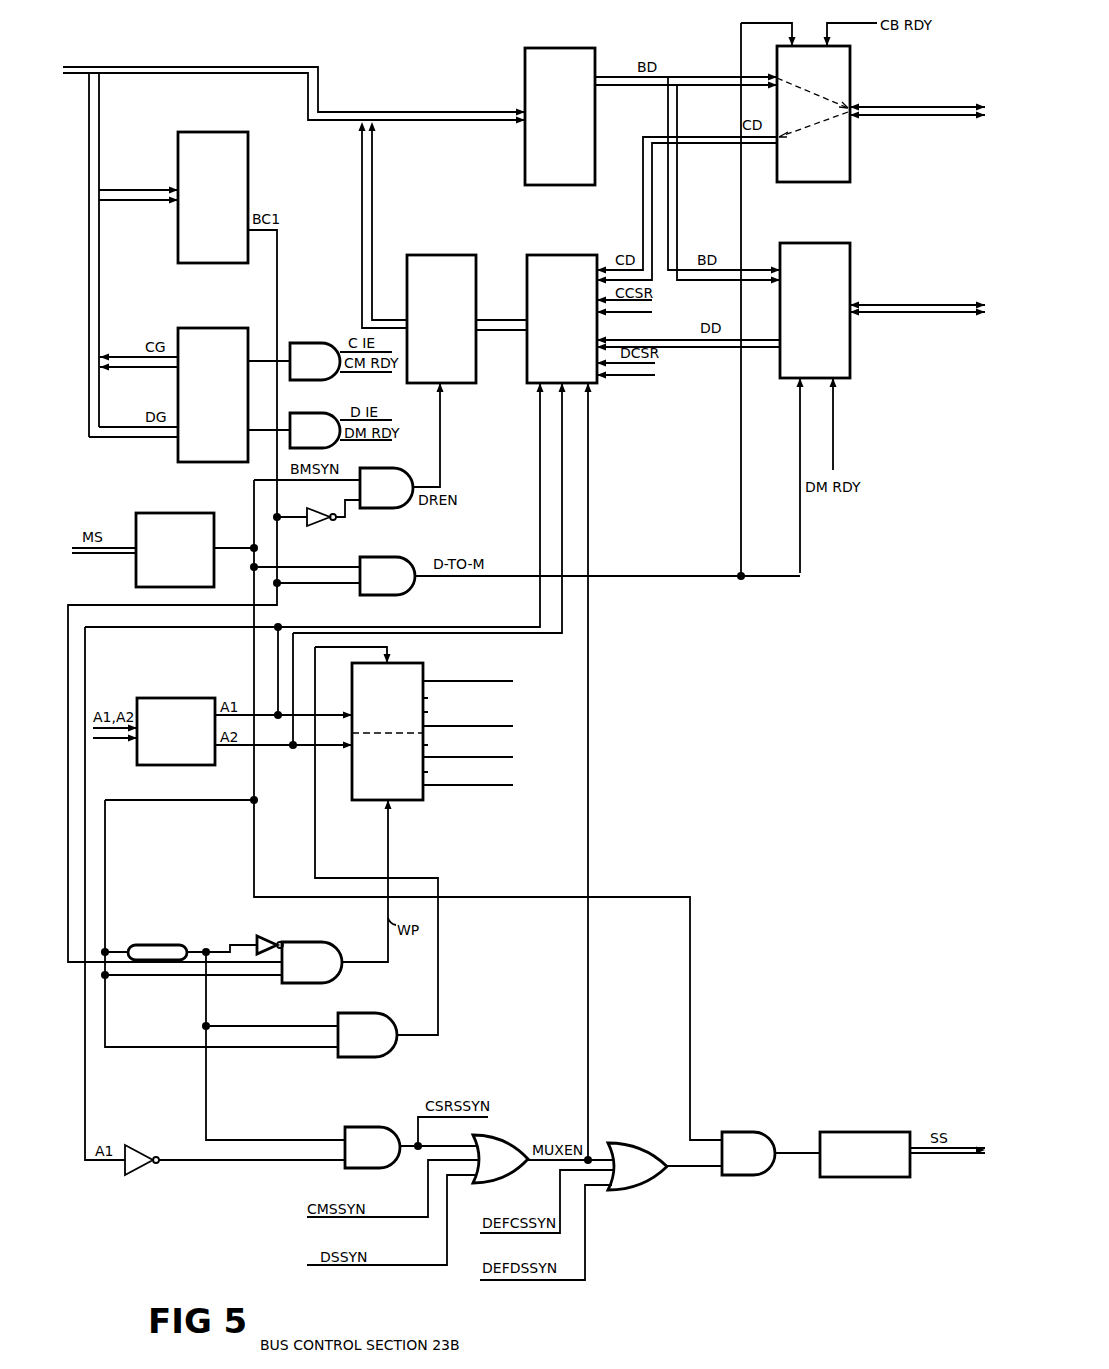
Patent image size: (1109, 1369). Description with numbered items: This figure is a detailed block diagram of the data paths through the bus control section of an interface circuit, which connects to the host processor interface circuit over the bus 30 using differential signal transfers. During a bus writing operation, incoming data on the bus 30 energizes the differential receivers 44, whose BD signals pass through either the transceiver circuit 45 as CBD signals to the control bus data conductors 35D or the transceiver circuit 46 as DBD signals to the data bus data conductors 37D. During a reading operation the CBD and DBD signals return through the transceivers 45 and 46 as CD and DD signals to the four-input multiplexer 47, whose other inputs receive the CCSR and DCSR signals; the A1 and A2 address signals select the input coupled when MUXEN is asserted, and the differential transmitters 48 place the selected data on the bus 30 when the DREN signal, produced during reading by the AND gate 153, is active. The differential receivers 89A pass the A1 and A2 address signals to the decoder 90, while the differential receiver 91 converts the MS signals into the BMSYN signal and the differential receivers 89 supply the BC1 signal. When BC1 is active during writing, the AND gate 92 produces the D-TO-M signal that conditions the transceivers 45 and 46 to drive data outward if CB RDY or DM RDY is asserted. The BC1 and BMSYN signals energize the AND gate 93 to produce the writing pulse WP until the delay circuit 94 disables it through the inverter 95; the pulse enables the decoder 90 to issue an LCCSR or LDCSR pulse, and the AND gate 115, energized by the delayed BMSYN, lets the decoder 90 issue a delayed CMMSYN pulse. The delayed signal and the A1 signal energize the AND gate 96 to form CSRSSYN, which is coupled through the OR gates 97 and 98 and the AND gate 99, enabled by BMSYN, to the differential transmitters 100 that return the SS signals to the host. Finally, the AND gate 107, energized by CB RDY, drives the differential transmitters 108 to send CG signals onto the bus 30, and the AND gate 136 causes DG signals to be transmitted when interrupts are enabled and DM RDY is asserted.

The bus 30 is at (108, 67).
The differential receivers 44 is at (568, 48).
The transceiver circuit 45 is at (858, 52).
The transceiver circuit 46 is at (858, 240).
The four-input multiplexer 47 is at (565, 255).
The differential transmitters 48 is at (445, 255).
The differential receivers 89 is at (248, 160).
The differential receivers 89A is at (188, 698).
The decoder 90 is at (410, 800).
The differential receiver 91 is at (186, 513).
The AND gate 92 is at (385, 557).
The AND gate 93 is at (330, 942).
The delay circuit 94 is at (160, 945).
The inverter 95 is at (265, 936).
The AND gate 96 is at (363, 1127).
The OR gate 97 is at (497, 1135).
The OR gate 98 is at (650, 1128).
The AND gate 99 is at (752, 1132).
The differential transmitters 100 is at (877, 1132).
The AND gate 107 is at (312, 343).
The differential transmitters 108 is at (200, 328).
The AND gate 115 is at (375, 1013).
The AND gate 136 is at (312, 413).
The AND gate 153 is at (383, 468).
The data section of bus 35 (CBD conductors) 35D is at (905, 117).
The data section of bus 37 (DBD conductors) 37D is at (910, 314).